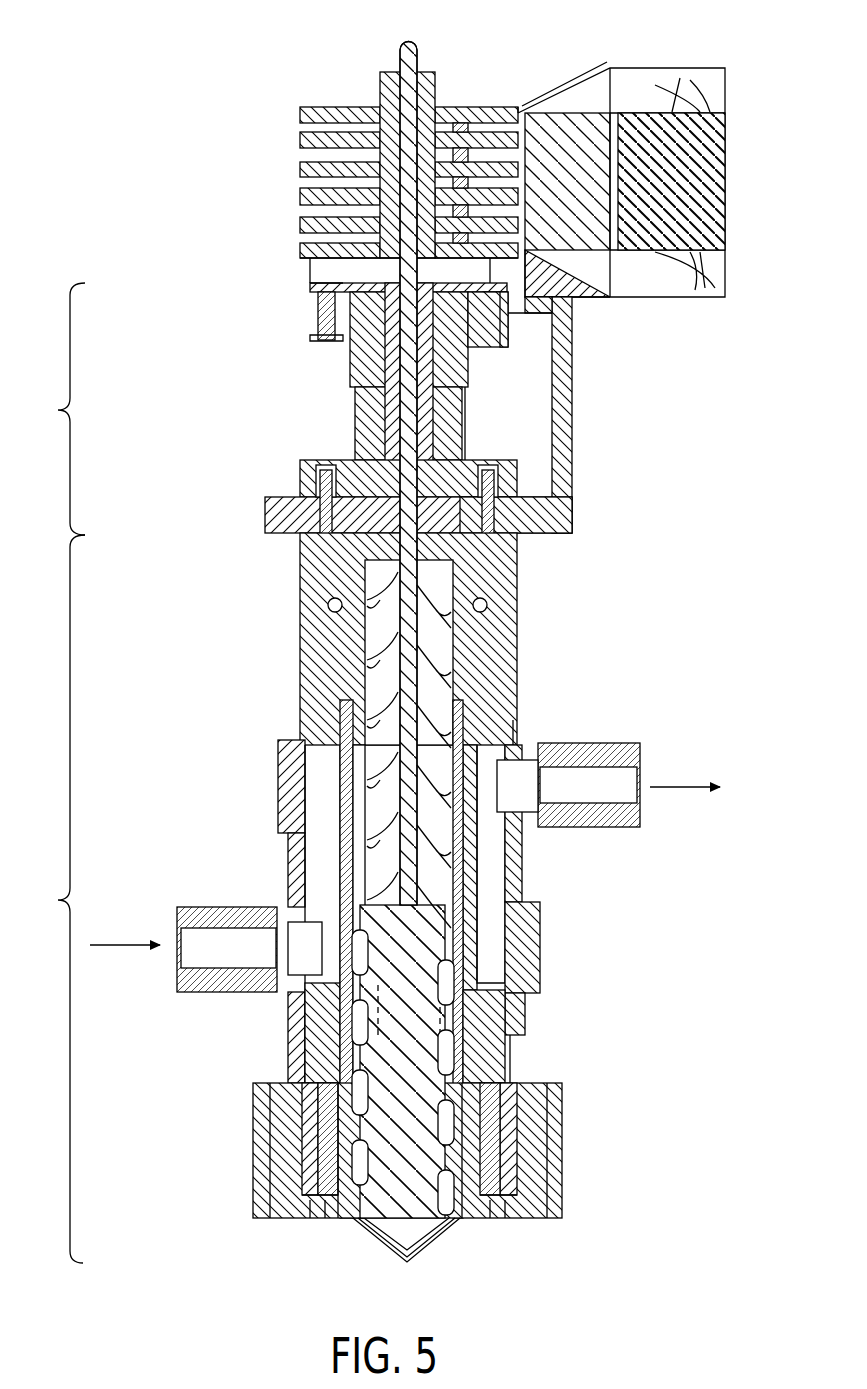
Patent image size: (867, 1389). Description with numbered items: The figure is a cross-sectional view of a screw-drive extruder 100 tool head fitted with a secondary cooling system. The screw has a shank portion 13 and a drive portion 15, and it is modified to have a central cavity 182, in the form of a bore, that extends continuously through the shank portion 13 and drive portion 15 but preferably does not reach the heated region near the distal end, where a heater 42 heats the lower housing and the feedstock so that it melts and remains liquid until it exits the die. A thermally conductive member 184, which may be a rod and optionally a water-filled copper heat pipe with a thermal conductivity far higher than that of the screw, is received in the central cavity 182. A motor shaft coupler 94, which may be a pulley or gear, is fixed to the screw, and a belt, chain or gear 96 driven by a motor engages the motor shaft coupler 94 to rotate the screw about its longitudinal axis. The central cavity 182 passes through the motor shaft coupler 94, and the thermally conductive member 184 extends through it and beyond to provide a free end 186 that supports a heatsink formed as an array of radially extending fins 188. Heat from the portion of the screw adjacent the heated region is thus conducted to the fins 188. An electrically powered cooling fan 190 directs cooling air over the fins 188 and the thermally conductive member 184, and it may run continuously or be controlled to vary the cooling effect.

The shank portion 13 is at (60, 409).
The drive portion 15 is at (60, 899).
The heater 42 is at (540, 1116).
The motor shaft coupler 94 is at (320, 283).
The belt or chain or gear 96 is at (313, 338).
The extruder 100 is at (440, 631).
The central cavity 182 is at (355, 345).
The thermally conductive member 184 is at (420, 60).
The free end 186 is at (370, 129).
The radially extending fins 188 is at (300, 141).
The cooling fan 190 is at (722, 150).